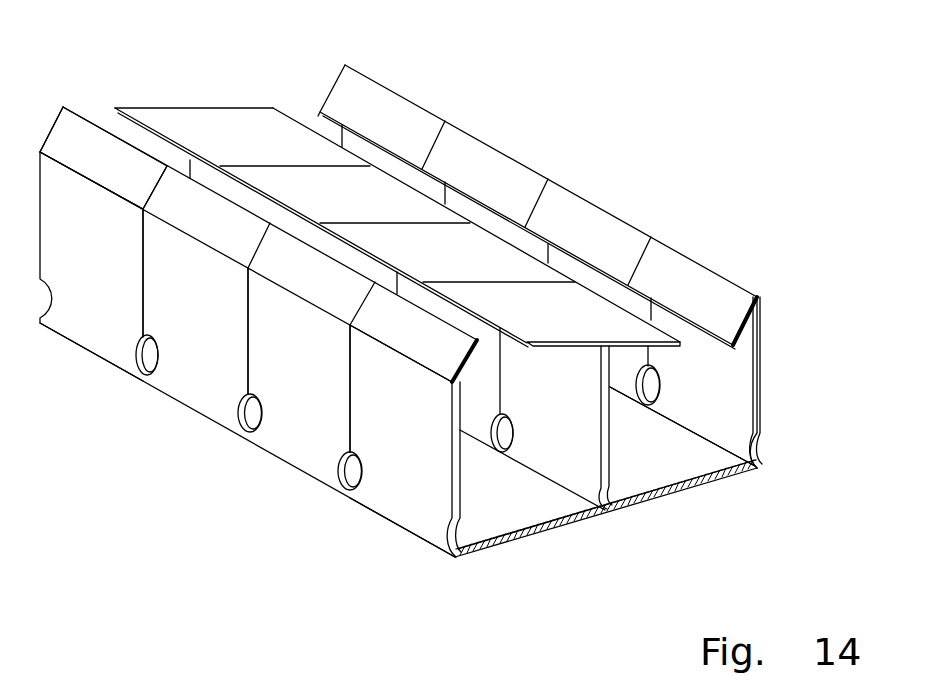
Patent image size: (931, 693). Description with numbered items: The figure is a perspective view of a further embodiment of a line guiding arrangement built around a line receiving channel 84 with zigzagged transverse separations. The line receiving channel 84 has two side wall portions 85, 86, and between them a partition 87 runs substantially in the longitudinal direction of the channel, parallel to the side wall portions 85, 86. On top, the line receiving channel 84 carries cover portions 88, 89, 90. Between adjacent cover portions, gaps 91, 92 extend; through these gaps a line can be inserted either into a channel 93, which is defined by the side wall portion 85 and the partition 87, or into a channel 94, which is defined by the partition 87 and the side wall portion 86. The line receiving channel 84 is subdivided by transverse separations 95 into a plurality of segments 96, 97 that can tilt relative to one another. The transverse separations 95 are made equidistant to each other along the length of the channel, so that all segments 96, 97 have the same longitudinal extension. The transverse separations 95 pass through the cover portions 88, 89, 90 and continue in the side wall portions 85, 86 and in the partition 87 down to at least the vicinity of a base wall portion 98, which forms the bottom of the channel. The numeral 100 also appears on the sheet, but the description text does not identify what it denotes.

The line receiving channel 84 is at (690, 89).
The side wall portion 85 is at (428, 500).
The side wall portion 86 is at (732, 425).
The partition 87 is at (573, 460).
The cover portion 88 is at (137, 173).
The cover portion 89 is at (333, 115).
The cover portion 90 is at (400, 127).
The gap 91 is at (100, 113).
The gap 92 is at (670, 327).
The channel 93 is at (563, 418).
The channel 94 is at (722, 405).
The transverse separation 95 is at (248, 347).
The segment 96 is at (292, 413).
The segment 97 is at (392, 488).
The base wall portion 98 is at (655, 466).
The raceway section 100 is at (355, 688).